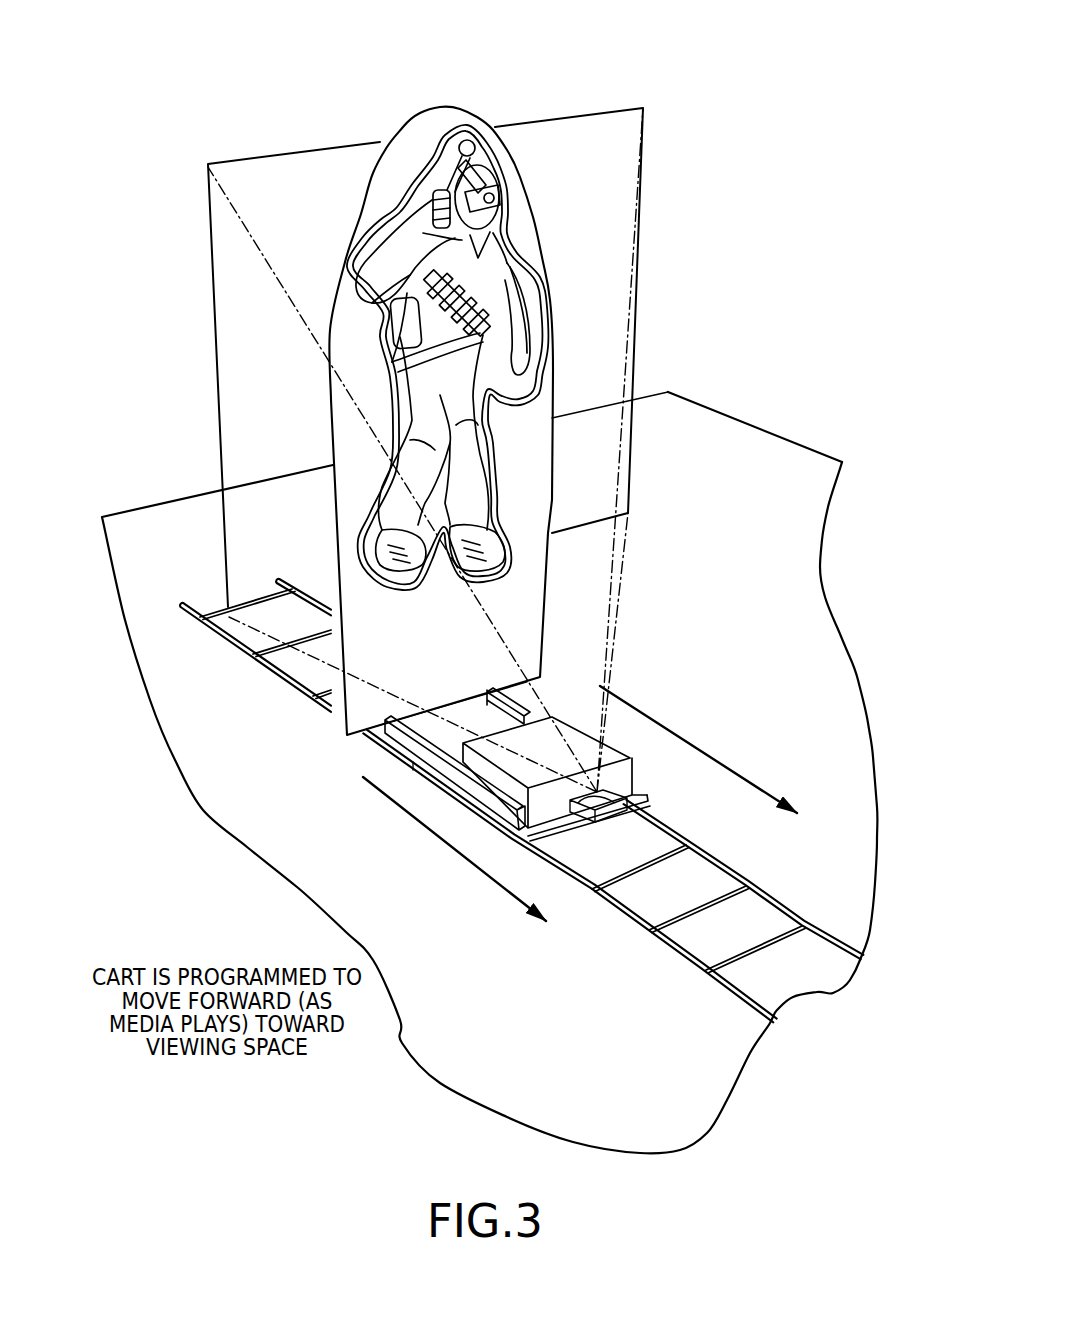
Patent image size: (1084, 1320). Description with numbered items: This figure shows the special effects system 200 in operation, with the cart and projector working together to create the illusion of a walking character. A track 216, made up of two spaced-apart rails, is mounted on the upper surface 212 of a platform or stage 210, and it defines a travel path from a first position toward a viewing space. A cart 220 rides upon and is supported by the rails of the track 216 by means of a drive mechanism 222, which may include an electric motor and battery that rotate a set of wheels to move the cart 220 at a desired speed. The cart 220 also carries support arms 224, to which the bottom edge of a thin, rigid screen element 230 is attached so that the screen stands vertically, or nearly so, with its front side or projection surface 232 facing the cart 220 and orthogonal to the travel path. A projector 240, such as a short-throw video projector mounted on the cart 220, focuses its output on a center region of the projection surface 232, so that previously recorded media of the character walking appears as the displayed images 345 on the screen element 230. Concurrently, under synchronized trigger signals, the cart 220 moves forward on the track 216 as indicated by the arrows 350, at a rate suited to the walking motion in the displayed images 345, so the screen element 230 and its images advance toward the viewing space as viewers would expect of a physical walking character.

The special effects system 200 is at (299, 94).
The platform or stage 210 is at (151, 491).
The upper surface 212 is at (205, 492).
The track 216 is at (799, 893).
The cart 220 is at (527, 801).
The drive mechanism 222 is at (477, 811).
The support arms 224 is at (410, 743).
The screen element 230 is at (490, 112).
The projection surface 232 is at (517, 196).
The projector 240 is at (567, 728).
The displayed images 345 is at (507, 317).
The movement of the cart 350 is at (402, 810).